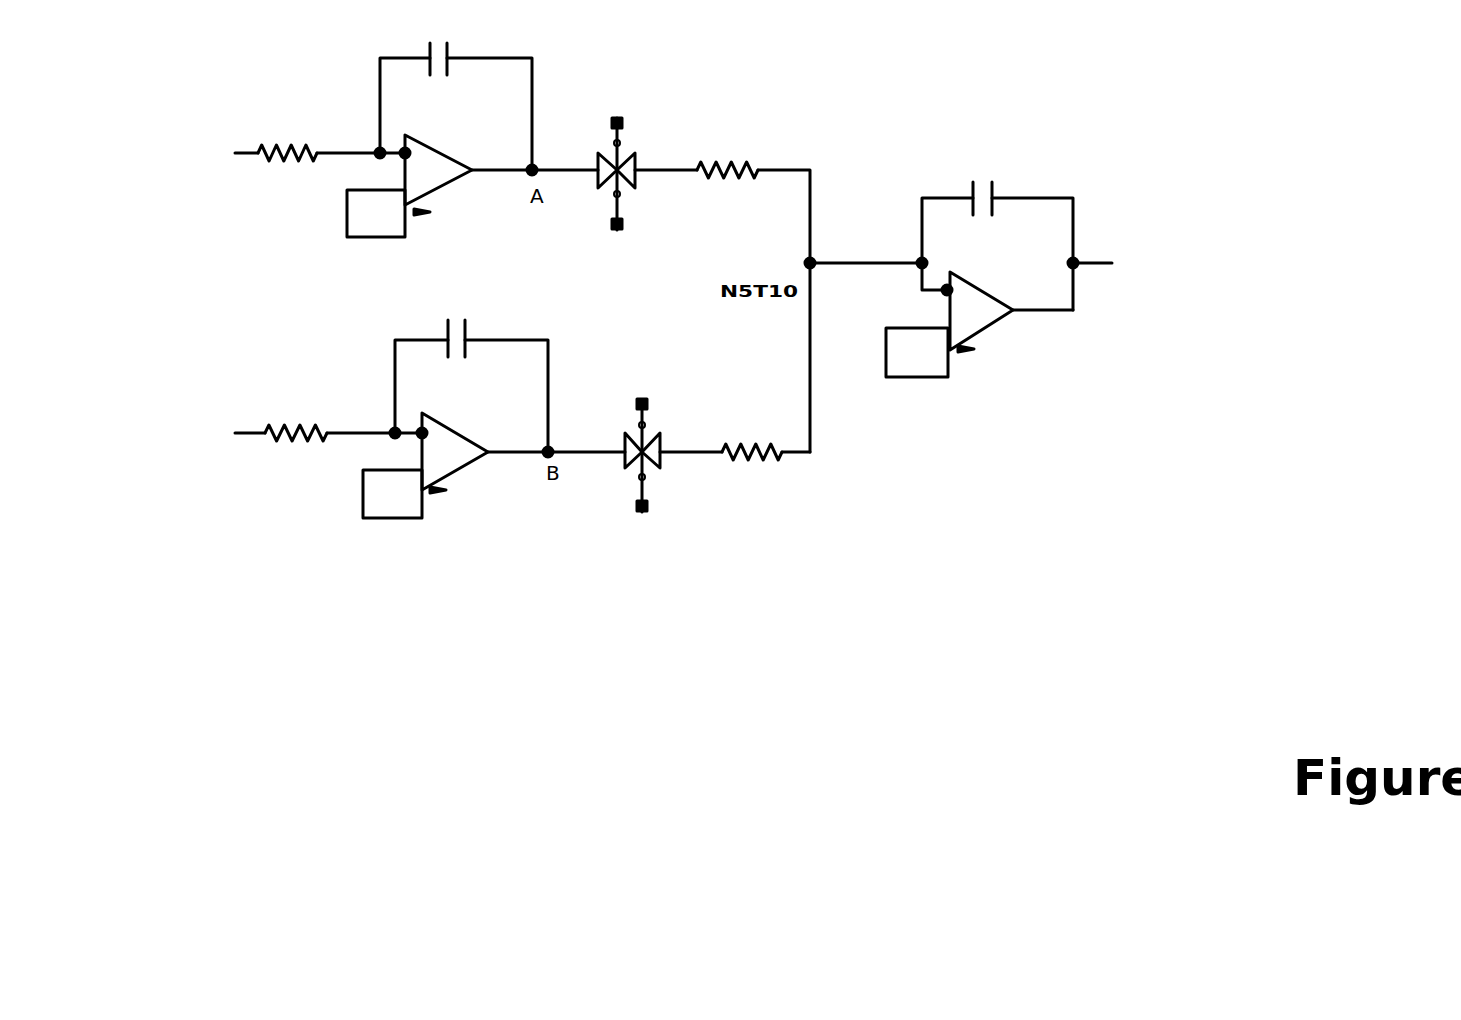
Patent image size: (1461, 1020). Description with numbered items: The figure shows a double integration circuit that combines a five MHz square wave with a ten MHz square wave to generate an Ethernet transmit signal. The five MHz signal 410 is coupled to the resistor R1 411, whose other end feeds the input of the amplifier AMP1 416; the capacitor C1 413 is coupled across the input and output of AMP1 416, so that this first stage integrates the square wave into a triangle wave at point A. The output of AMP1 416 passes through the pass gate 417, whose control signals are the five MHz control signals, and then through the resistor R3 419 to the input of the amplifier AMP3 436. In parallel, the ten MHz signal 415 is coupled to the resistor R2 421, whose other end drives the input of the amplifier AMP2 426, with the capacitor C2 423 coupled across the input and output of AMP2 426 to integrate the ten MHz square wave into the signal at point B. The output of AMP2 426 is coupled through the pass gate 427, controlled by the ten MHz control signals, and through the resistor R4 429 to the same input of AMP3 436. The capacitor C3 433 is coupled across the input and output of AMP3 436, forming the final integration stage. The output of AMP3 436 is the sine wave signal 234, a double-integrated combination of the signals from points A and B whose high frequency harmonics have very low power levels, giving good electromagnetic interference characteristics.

The five MHz signal 410 is at (190, 150).
The resistor R1 411 is at (289, 152).
The capacitor C1 413 is at (456, 94).
The ten MHz signal 415 is at (191, 431).
The amplifier AMP1 416 is at (439, 190).
The pass gate 417 is at (626, 150).
The resistor R3 419 is at (729, 172).
The resistor R2 421 is at (296, 431).
The capacitor C2 423 is at (471, 370).
The amplifier AMP2 426 is at (455, 471).
The pass gate 427 is at (658, 431).
The resistor R4 429 is at (760, 478).
The capacitor C3 433 is at (997, 234).
The amplifier AMP3 436 is at (979, 324).
The sine wave signal 234 is at (1144, 258).